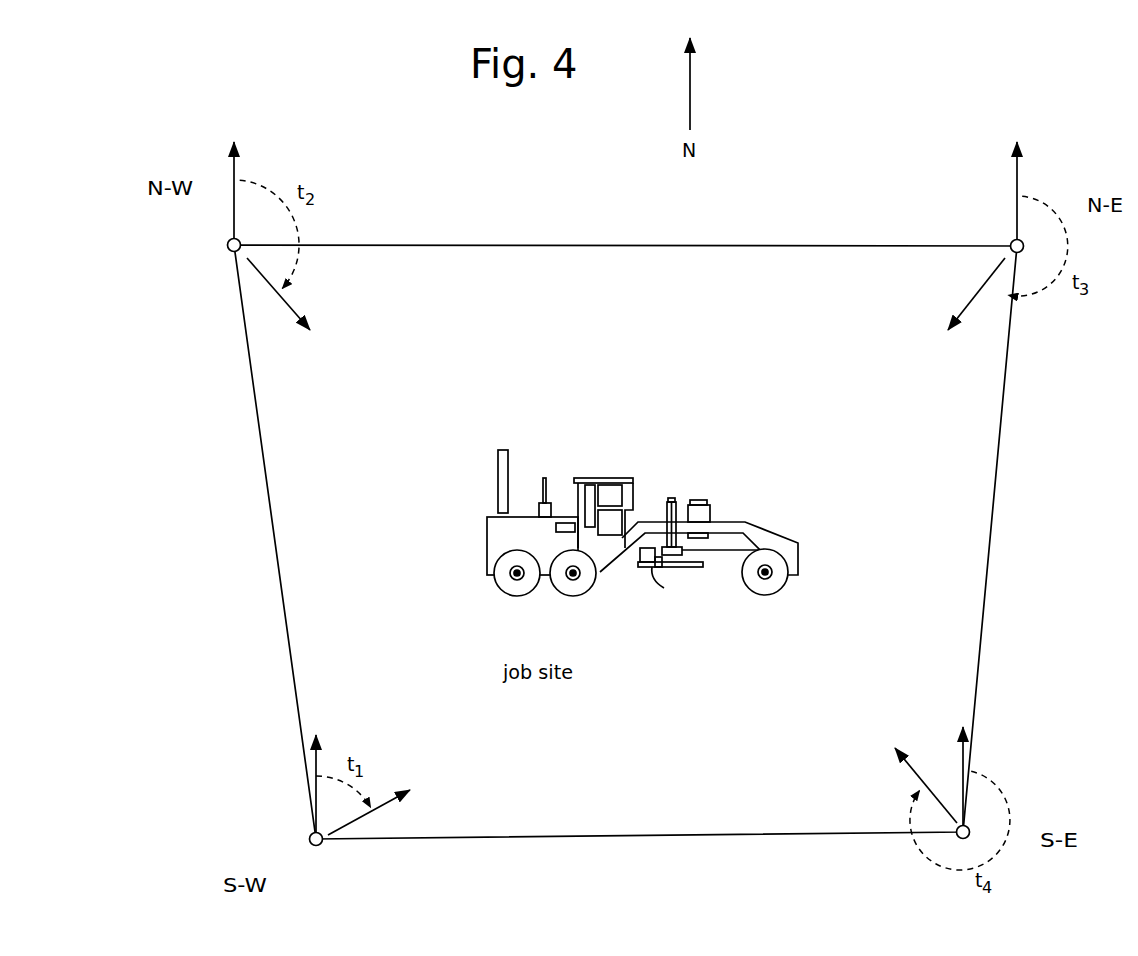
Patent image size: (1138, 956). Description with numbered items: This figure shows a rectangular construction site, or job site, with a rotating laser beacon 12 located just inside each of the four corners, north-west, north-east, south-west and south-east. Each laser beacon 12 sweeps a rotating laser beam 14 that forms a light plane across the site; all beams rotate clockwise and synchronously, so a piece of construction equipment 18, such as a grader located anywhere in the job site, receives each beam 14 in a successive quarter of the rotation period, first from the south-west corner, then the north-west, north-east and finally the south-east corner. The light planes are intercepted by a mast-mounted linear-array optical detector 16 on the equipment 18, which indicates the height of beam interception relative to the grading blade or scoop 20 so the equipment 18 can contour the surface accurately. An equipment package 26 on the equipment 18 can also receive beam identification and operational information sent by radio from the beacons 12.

The rotating laser beacon 12 is at (228, 245).
The laser beam 14 is at (292, 310).
The mast-mounted linear-array optical detector 16 is at (548, 470).
The construction equipment 18 is at (673, 526).
The grading blade 20 is at (667, 590).
The equipment package 26 is at (508, 452).